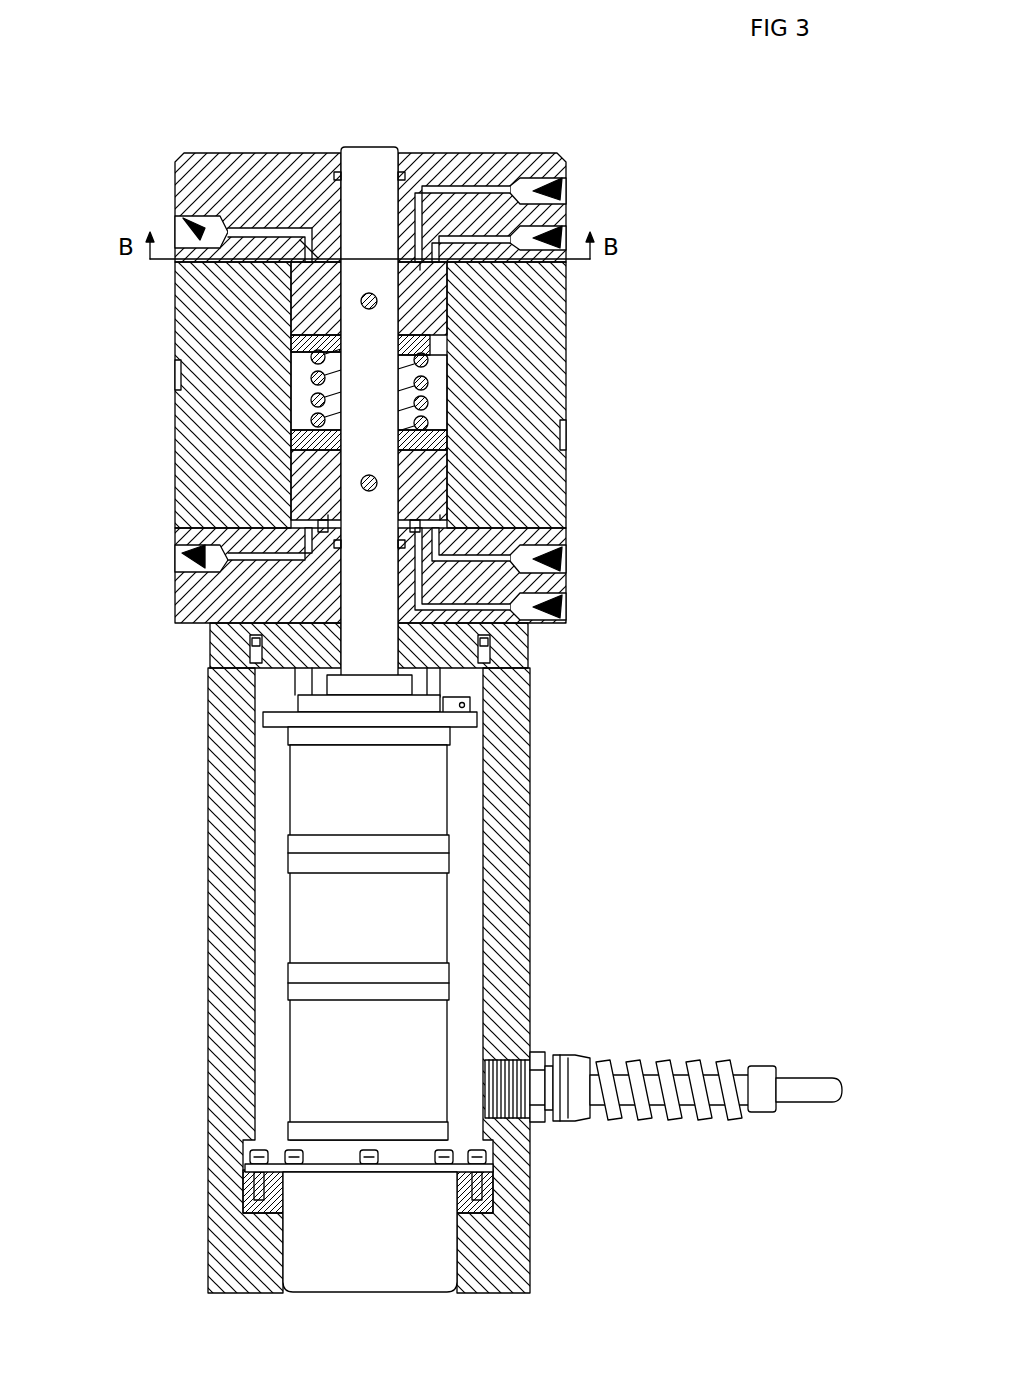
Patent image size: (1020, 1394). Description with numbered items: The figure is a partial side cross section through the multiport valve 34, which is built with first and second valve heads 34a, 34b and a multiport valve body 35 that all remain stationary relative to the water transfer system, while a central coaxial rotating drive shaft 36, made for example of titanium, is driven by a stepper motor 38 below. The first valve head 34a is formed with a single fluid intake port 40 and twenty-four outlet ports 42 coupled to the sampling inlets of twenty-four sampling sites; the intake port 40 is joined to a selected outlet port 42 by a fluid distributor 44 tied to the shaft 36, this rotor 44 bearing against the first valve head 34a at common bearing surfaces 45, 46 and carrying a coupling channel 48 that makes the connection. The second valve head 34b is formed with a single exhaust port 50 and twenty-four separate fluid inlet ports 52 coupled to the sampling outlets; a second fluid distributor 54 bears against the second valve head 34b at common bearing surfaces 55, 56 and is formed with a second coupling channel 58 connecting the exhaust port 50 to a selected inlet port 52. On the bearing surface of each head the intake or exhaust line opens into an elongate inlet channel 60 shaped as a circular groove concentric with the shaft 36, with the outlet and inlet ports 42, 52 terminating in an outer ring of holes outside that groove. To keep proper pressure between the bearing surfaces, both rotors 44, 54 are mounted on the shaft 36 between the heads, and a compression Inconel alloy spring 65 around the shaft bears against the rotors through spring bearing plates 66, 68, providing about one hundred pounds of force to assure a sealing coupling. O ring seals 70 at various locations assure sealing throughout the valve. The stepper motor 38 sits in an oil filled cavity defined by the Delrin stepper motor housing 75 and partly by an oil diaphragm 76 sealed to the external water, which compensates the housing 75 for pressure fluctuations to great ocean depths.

The multiport valve 34 is at (774, 103).
The first valve head 34a is at (315, 190).
The second valve head 34b is at (312, 598).
The multiport valve body 35 is at (370, 399).
The rotating drive shaft 36 is at (387, 415).
The stepper motor 38 is at (388, 810).
The fluid intake port 40 is at (542, 175).
The outlet ports 42 is at (373, 175).
The fluid distributor 44 is at (333, 395).
The bearing surface 45 is at (225, 172).
The bearing surface 46 is at (251, 172).
The coupling channel 48 is at (530, 290).
The exhaust port 50 is at (541, 590).
The fluid inlet ports 52 is at (385, 532).
The second fluid distributor 54 is at (273, 391).
The bearing surface 55 is at (184, 498).
The bearing surface 56 is at (211, 497).
The second coupling channel 58 is at (554, 488).
The inlet channel 60 is at (369, 379).
The compression spring 65 is at (466, 390).
The spring bearing plate 66 is at (114, 328).
The spring bearing plate 68 is at (273, 392).
The O ring seals 70 is at (370, 705).
The stepper motor housing 75 is at (471, 980).
The oil diaphragm 76 is at (369, 1256).